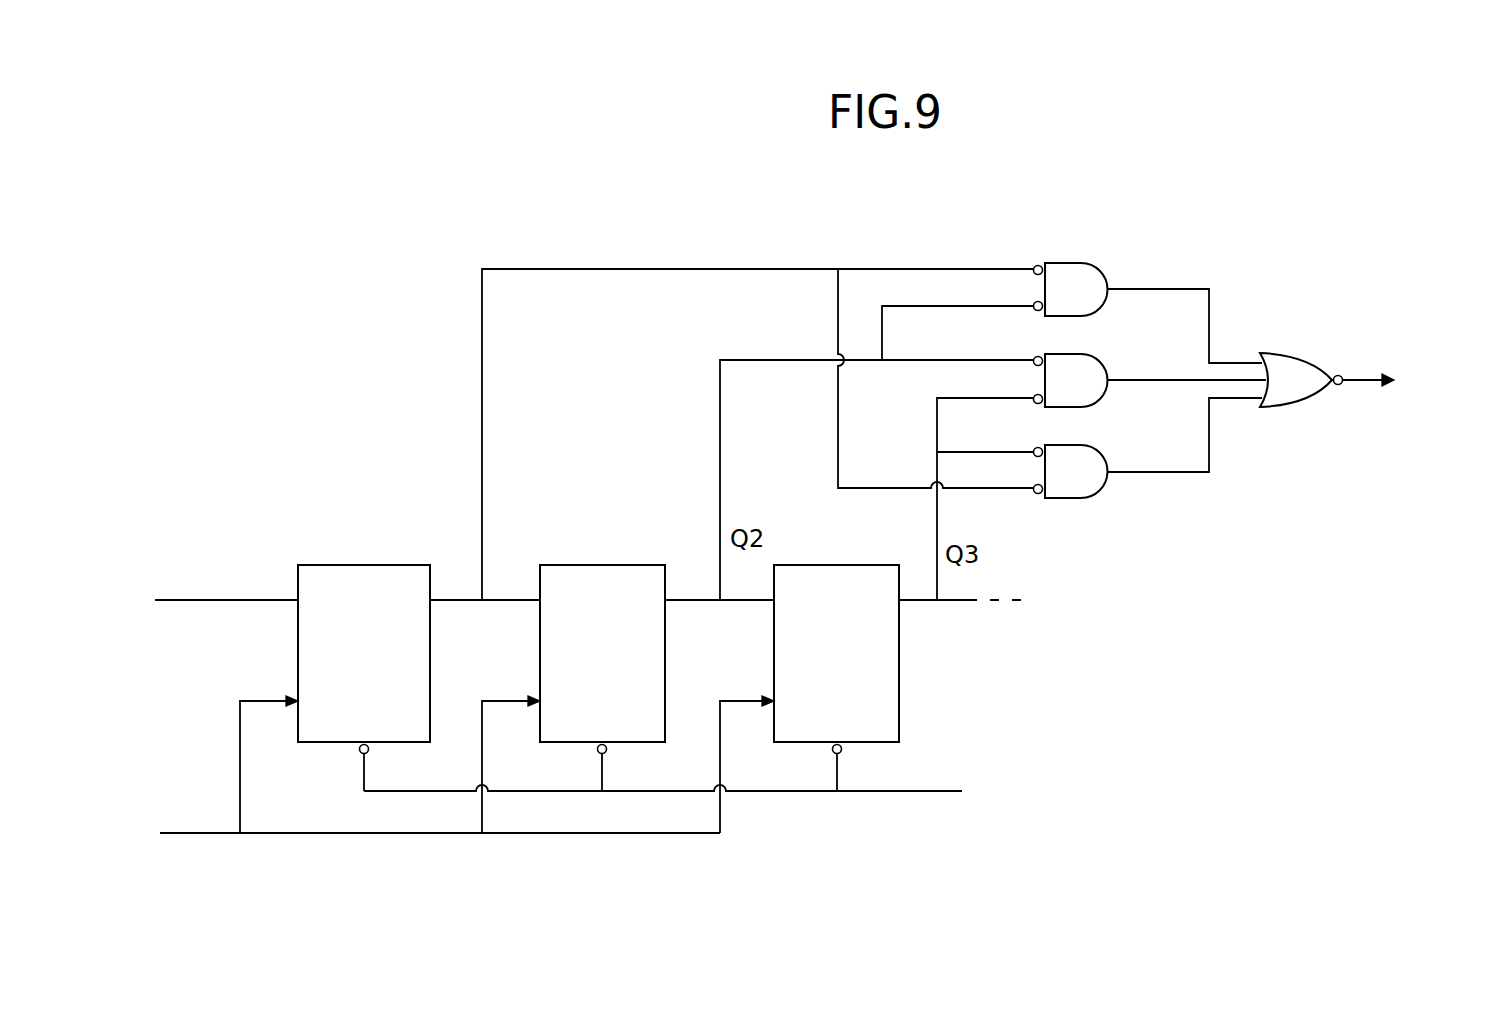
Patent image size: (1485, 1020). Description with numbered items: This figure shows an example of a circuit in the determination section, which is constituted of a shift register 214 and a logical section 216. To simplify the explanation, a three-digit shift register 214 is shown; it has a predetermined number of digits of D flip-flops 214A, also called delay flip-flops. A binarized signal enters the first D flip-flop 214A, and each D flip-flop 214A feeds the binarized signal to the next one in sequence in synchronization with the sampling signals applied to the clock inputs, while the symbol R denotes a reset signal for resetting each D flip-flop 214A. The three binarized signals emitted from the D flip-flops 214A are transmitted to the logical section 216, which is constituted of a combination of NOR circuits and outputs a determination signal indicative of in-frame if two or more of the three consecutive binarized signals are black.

The shift register 214 is at (660, 693).
The D flip-flop 214A is at (390, 547).
The logical section 216 is at (1228, 510).